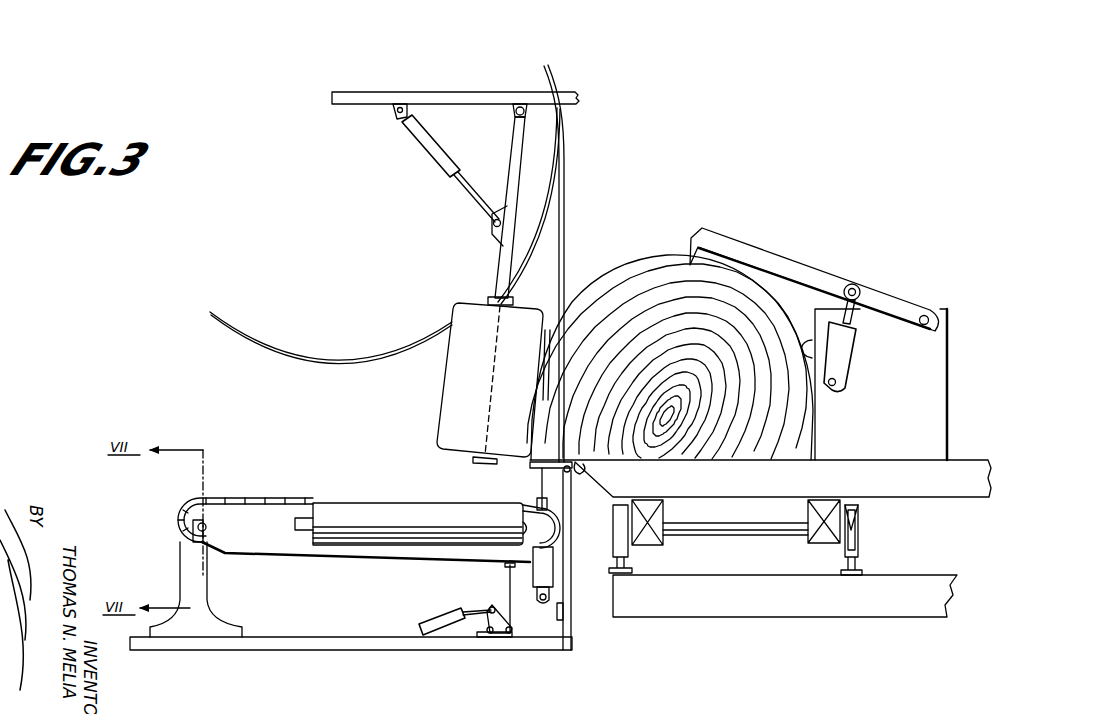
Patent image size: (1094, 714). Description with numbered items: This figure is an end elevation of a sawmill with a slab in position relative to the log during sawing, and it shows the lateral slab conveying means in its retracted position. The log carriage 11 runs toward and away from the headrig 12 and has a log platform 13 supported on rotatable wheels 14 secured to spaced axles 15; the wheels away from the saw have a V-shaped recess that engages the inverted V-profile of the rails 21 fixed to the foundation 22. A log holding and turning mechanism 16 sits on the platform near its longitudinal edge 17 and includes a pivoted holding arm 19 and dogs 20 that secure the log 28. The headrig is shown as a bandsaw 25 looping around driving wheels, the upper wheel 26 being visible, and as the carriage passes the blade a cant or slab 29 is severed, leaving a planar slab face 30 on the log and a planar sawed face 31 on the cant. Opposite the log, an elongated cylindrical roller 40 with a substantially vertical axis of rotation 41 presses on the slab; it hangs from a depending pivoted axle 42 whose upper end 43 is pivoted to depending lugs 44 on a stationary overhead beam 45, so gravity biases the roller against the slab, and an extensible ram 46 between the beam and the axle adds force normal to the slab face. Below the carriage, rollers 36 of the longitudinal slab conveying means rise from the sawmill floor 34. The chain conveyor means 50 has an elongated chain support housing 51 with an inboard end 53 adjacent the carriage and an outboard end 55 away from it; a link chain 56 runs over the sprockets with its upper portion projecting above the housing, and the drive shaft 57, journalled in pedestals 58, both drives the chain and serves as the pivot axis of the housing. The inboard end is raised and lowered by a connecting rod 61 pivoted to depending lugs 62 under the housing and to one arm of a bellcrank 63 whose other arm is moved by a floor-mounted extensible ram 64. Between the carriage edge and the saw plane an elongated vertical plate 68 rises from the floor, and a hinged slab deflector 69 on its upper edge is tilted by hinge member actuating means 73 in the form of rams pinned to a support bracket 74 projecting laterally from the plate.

The log carriage 11 is at (970, 400).
The headrig 12 is at (585, 175).
The log platform 13 is at (988, 472).
The rotatable wheels 14 is at (856, 527).
The axles 15 is at (762, 538).
The log holding and turning mechanism 16 is at (920, 350).
The longitudinal edge 17 is at (585, 470).
The pivoted holding arm 19 is at (787, 262).
The dogs 20 is at (800, 343).
The rails 21 is at (632, 560).
The foundation 22 is at (796, 598).
The bandsaw 25 is at (565, 240).
The upper wheel 26 is at (290, 348).
The log 28 is at (635, 292).
The cant or slab 29 is at (552, 352).
The planar slab face 30 is at (558, 378).
The planar sawed face 31 is at (570, 410).
The sawmill floor 34 is at (290, 637).
The rollers 36 is at (347, 508).
The elongated cylindrical roller 40 is at (470, 384).
The axis of rotation 41 is at (493, 370).
The depending pivoted axle 42 is at (503, 192).
The upper end 43 is at (514, 124).
The depending lugs 44 is at (525, 113).
The stationary overhead beam 45 is at (456, 92).
The extensible ram 46 is at (430, 146).
The chain conveyor means 50 is at (290, 540).
The chain support housing 51 is at (257, 504).
The inboard end 53 is at (553, 510).
The outboard end 55 is at (280, 493).
The link chain 56 is at (292, 504).
The drive shaft 57 is at (208, 527).
The pedestals 58 is at (208, 585).
The connecting rod 61 is at (494, 607).
The depending lugs 62 is at (505, 564).
The bellcrank 63 is at (492, 636).
The extensible ram 64 is at (432, 621).
The vertical plate 68 is at (571, 553).
The slab deflector 69 is at (530, 458).
The hinge member actuating means 73 is at (548, 576).
The support bracket 74 is at (565, 616).